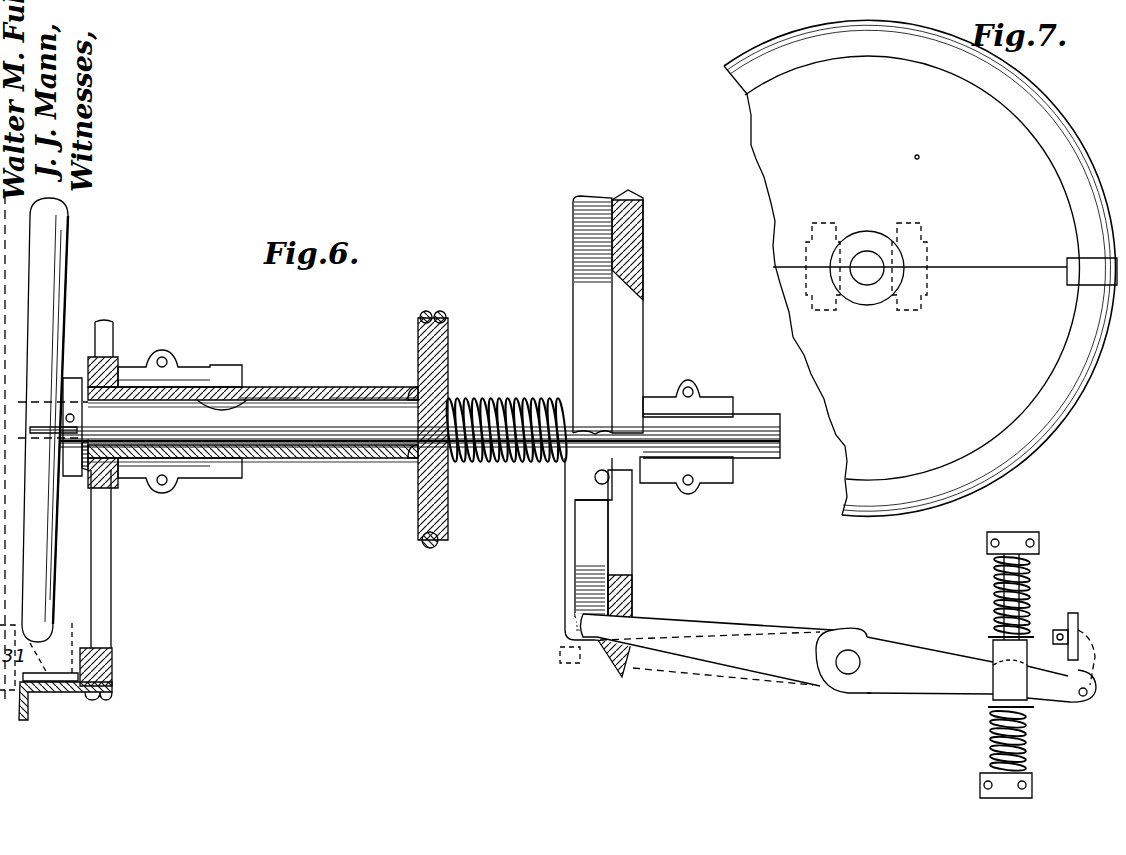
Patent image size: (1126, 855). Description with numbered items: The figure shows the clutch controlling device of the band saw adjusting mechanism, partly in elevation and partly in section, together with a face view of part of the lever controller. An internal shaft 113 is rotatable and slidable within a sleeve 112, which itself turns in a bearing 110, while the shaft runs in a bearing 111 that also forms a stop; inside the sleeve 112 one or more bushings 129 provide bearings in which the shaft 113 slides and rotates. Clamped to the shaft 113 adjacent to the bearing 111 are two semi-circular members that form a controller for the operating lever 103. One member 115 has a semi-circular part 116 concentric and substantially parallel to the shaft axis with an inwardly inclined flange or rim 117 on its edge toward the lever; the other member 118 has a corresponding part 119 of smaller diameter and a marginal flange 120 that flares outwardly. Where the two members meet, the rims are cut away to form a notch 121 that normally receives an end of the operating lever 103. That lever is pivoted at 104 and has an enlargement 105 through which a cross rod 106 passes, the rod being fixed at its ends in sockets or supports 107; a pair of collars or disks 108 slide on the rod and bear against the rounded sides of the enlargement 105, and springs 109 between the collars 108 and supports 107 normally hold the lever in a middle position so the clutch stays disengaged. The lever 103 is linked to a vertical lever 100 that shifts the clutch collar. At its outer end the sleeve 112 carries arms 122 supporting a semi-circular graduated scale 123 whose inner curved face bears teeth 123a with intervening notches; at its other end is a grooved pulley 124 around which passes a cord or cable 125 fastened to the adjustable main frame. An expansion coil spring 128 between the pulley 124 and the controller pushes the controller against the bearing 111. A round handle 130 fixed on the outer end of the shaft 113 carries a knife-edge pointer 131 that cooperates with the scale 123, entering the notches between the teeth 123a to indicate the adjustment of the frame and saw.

In FIG. 6, the vertical lever 100 is at (1078, 632).
In FIG. 6, the operating lever 103 is at (922, 664).
In FIG. 6, the pivot 104 is at (848, 654).
In FIG. 6, the enlargement 105 is at (992, 698).
In FIG. 6, the cross rod 106 is at (1020, 640).
In FIG. 6, the sockets or supports 107 is at (1006, 532).
In FIG. 6, the collars or disks 108 is at (992, 640).
In FIG. 6, the springs 109 is at (998, 590).
In FIG. 6, the bearing 110 is at (186, 377).
In FIG. 6, the bearing 111 is at (700, 403).
In FIG. 6, the sleeve 112 is at (304, 397).
In FIG. 6, the internal shaft 113 is at (742, 428).
In FIG. 6, the controller member 115 is at (585, 294).
In FIG. 7, the controller member 115 is at (919, 268).
In FIG. 6, the semi-circular part 116 is at (587, 335).
In FIG. 6, the inwardly inclined flange or rim 117 is at (627, 368).
In FIG. 6, the controller member 118 is at (575, 536).
In FIG. 7, the controller member 118 is at (920, 283).
In FIG. 6, the semi-circular part 119 is at (596, 522).
In FIG. 6, the marginal flange 120 is at (645, 202).
In FIG. 7, the notch 121 is at (1092, 271).
In FIG. 6, the arms 122 is at (108, 563).
In FIG. 6, the graduated scale 123 is at (40, 694).
In FIG. 6, the teeth 123a is at (46, 674).
In FIG. 6, the grooved pulley 124 is at (440, 360).
In FIG. 6, the cord or cable 125 is at (424, 546).
In FIG. 6, the expansion coil spring 128 is at (487, 464).
In FIG. 6, the bushings 129 is at (248, 408).
In FIG. 6, the round handle 130 is at (67, 311).
In FIG. 6, the knife-edge pointer 131 is at (60, 434).